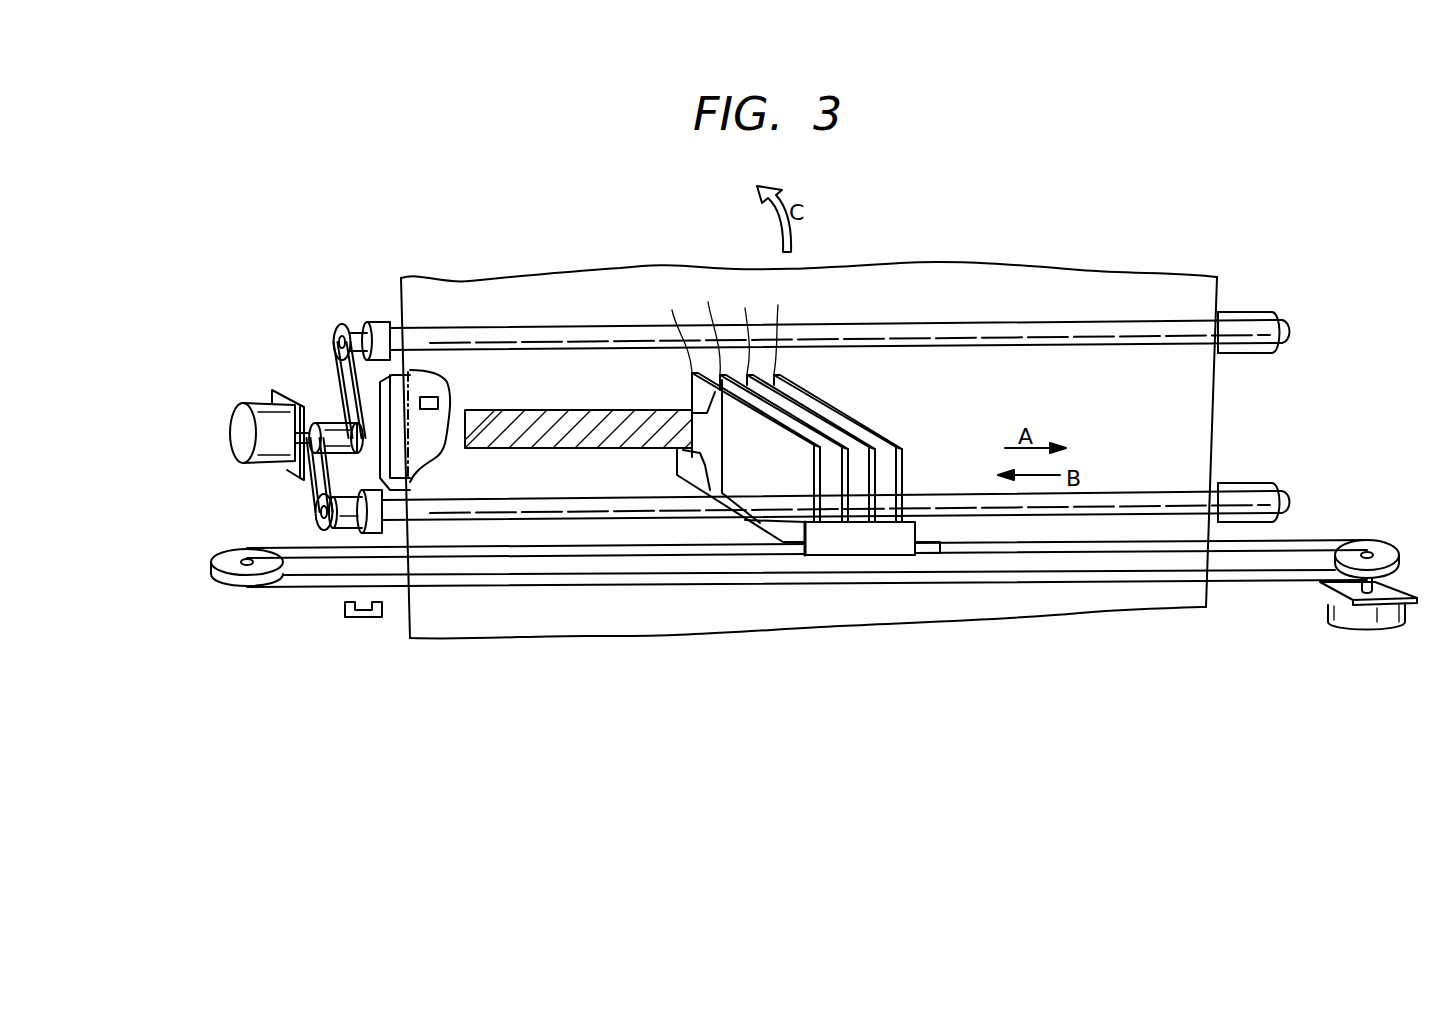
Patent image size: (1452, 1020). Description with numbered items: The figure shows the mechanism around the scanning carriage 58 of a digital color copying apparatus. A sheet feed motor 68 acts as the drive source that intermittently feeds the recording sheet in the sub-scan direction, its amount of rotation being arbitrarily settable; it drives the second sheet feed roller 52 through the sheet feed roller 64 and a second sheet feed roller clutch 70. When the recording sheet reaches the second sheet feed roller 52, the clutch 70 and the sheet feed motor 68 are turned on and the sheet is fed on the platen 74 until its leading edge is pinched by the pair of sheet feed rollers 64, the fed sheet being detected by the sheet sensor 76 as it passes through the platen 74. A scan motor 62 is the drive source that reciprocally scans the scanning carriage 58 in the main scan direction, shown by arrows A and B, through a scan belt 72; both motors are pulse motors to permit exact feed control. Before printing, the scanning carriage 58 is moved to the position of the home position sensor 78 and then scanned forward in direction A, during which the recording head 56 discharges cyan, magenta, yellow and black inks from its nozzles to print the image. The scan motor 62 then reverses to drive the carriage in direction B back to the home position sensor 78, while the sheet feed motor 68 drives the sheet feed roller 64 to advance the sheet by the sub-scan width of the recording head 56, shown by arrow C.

The second sheet feed roller 52 is at (1284, 498).
The recording head 56 is at (873, 430).
The scanning carriage 58 is at (866, 548).
The scan motor 62 is at (1365, 638).
The sheet feed roller 64 is at (1288, 328).
The sheet feed motor 68 is at (232, 427).
The second sheet feed roller clutch 70 is at (318, 517).
The scan belt 72 is at (1063, 582).
The platen 74 is at (382, 402).
The sheet sensor 76 is at (432, 397).
The home position sensor 78 is at (345, 607).